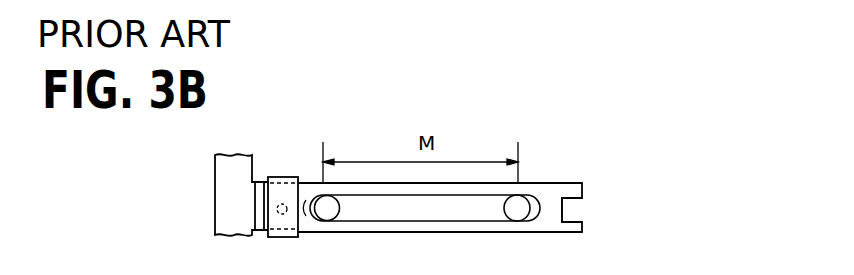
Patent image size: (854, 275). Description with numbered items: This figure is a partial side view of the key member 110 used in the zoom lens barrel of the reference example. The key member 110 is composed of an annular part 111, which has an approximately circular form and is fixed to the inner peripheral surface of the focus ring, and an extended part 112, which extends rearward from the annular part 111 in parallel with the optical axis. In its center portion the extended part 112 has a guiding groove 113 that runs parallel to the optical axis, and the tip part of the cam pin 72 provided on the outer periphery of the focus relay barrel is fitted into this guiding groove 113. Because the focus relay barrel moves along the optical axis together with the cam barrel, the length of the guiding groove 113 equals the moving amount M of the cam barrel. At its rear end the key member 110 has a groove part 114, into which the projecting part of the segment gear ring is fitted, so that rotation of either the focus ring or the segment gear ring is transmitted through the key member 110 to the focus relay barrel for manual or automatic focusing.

The key member 110 is at (602, 182).
The annular part 111 is at (233, 218).
The extended part 112 is at (343, 232).
The guiding groove 113 is at (425, 200).
The cam pin 72 is at (515, 220).
The groove part 114 is at (567, 210).